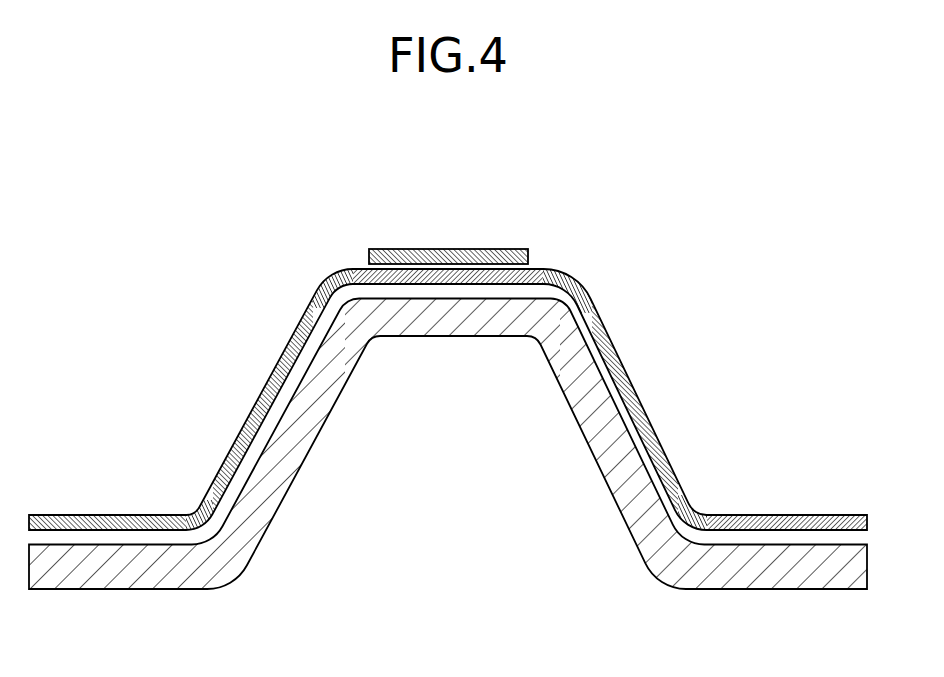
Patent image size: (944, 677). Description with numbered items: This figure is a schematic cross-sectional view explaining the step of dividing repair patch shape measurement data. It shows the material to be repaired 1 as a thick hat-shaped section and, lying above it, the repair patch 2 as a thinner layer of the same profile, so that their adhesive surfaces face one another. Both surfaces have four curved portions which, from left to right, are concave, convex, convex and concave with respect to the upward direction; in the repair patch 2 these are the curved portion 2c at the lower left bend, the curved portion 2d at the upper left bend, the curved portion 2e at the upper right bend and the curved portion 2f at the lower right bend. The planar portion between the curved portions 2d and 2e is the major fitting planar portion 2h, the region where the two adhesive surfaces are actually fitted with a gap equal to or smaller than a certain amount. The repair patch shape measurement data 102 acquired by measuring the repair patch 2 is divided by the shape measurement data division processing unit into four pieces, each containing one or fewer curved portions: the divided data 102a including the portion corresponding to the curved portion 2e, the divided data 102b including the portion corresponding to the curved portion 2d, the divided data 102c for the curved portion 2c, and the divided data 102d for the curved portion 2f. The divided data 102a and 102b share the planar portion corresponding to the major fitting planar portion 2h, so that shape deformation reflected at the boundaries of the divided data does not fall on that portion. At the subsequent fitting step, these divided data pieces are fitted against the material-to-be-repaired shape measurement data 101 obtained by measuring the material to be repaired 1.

The material to be repaired 1 is at (702, 591).
The material-to-be-repaired shape measurement data 101 is at (755, 591).
The repair patch shape measurement data 102 is at (572, 227).
The divided data 102a is at (470, 257).
The divided data 102b is at (353, 269).
The divided data 102c is at (157, 516).
The divided data 102d is at (800, 516).
The repair patch 2 is at (534, 231).
The curved portion 2c is at (185, 494).
The curved portion 2d is at (326, 266).
The curved portion 2e is at (582, 258).
The curved portion 2f is at (707, 497).
The major fitting planar portion 2h is at (527, 163).